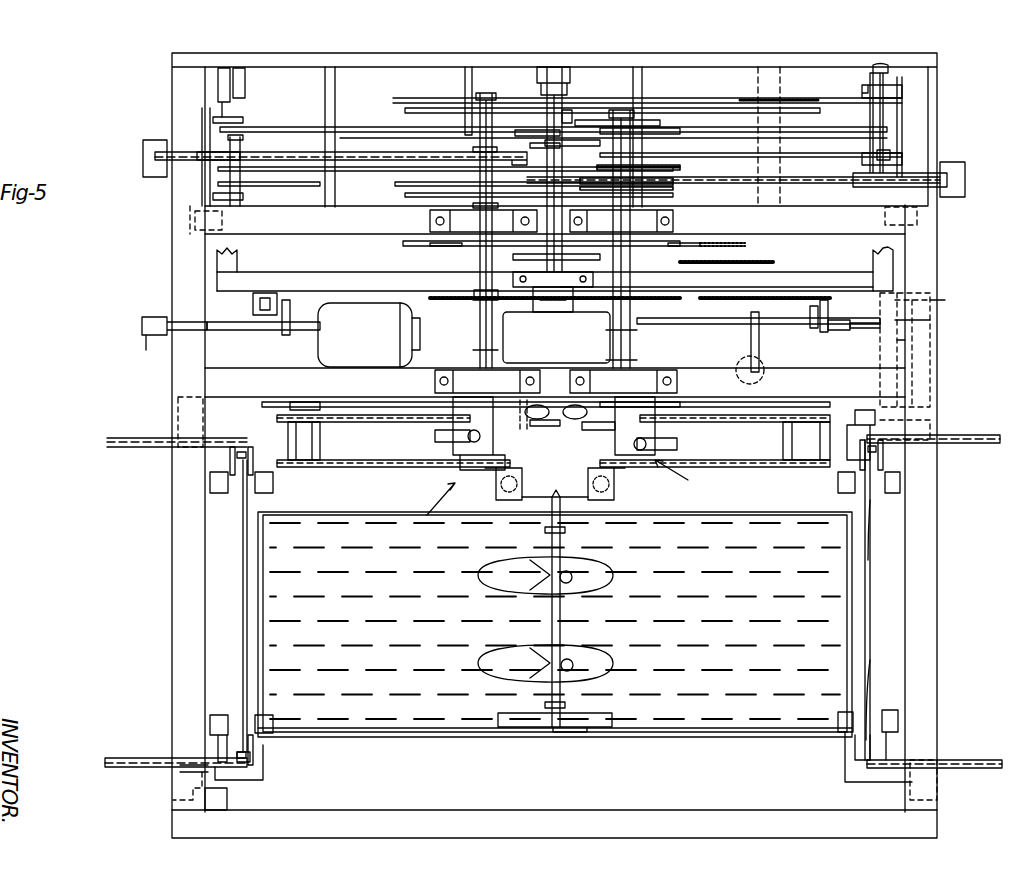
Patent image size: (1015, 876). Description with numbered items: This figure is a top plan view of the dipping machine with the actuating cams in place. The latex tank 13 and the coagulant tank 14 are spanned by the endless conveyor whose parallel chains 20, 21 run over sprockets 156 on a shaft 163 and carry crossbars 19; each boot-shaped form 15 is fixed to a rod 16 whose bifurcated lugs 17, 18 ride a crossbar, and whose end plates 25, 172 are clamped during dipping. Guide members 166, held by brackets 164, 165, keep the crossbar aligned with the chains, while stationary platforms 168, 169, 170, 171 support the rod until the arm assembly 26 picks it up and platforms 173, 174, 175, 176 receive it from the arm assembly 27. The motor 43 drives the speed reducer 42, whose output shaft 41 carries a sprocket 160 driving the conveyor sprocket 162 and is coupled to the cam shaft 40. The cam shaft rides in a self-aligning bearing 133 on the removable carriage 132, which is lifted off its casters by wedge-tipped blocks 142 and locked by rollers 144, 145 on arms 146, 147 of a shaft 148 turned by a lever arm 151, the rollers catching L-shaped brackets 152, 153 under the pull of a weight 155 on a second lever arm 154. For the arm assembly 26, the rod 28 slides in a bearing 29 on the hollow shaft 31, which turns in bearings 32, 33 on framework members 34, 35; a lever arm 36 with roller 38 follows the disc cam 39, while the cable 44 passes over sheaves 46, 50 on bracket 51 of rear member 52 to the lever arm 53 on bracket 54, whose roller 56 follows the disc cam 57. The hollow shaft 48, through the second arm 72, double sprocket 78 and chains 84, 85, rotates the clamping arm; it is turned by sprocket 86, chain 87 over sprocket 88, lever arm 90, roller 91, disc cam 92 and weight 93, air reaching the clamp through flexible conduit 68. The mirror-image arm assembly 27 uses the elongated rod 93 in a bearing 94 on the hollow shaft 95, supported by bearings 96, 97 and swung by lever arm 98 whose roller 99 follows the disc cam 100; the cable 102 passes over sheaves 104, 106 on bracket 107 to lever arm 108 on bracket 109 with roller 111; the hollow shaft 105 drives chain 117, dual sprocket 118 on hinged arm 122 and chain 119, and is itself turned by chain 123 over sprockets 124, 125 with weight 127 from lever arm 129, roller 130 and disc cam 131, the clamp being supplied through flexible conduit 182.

The tank of liquid latex 13 is at (696, 735).
The tank of liquid coagulant 14 is at (356, 735).
The dipping forms 15 is at (530, 585).
The rod 16 is at (555, 615).
The bifurcated lug 17 is at (548, 710).
The bifurcated lug 18 is at (545, 530).
The crossbars 19 is at (240, 598).
The chain 20 is at (146, 772).
The chain 21 is at (145, 437).
The plate 25 is at (590, 430).
The arm assembly 26 is at (675, 481).
The arm assembly 27 is at (419, 513).
The elongated rod 28 is at (674, 427).
The bearing 29 is at (677, 442).
The hollow shaft 31 is at (632, 343).
The bearing 32 is at (623, 382).
The bearing 33 is at (621, 222).
The horizontal framework member 34 is at (213, 383).
The horizontal framework member 35 is at (177, 232).
The lever arm 36 is at (672, 284).
The cam follower roller 38 is at (680, 260).
The disc cam 39 is at (748, 259).
The shaft 40 is at (556, 262).
The output shaft 41 is at (553, 312).
The speed reducer 42 is at (556, 337).
The motor 43 is at (369, 335).
The flexible cable 44 is at (612, 150).
The sheave 46 is at (616, 492).
The hollow shaft 48 is at (668, 243).
The sheave 50 is at (631, 134).
The bracket 51 is at (642, 80).
The horizontal framework member 52 is at (937, 58).
The lever arm 53 is at (324, 128).
The bracket 54 is at (218, 108).
The cam follower roller 56 is at (536, 132).
The disc cam 57 is at (742, 132).
The flexible conduit 68 is at (536, 418).
The second arm 72 is at (752, 412).
The double sprocket 78 is at (784, 440).
The chain 84 is at (748, 470).
The chain 85 is at (714, 410).
The sprocket 86 is at (638, 222).
The chain 87 is at (835, 183).
The sprocket 88 is at (918, 214).
The lever arm 90 is at (308, 188).
The cam follower roller 91 is at (556, 263).
The disc cam 92 is at (700, 190).
The weight 93 is at (965, 165).
The bearing 94 is at (453, 457).
The hollow shaft 95 is at (472, 348).
The bearing 96 is at (487, 382).
The bearing 97 is at (483, 222).
The lever arm 98 is at (445, 246).
The cam follower roller 99 is at (432, 243).
The disc cam 100 is at (712, 243).
The flexible cable 102 is at (470, 108).
The sheave 104 is at (486, 500).
The hollow shaft 105 is at (478, 176).
The sheave 106 is at (486, 96).
The bracket 107 is at (462, 80).
The lever arm 108 is at (576, 100).
The bracket 109 is at (907, 137).
The cam follower roller 111 is at (549, 92).
The chain 117 is at (368, 425).
The dual sprocket 118 is at (268, 410).
The chain 119 is at (366, 470).
The hinged arm 122 is at (312, 404).
The chain 123 is at (302, 168).
The sprocket 124 is at (450, 150).
The sprocket 125 is at (182, 162).
The weight 127 is at (150, 140).
The lever arm 129 is at (749, 137).
The cam follower roller 130 is at (545, 176).
The disc cam 131 is at (672, 170).
The carriage 132 is at (808, 261).
The self-aligning bearing 133 is at (609, 121).
The wedge-tipped blocks 142 is at (218, 76).
The roller 144 is at (828, 306).
The roller 145 is at (280, 266).
The arm 146 is at (838, 330).
The arm 147 is at (296, 306).
The shaft 148 is at (758, 310).
The lever arm 151 is at (146, 350).
The L-shaped bracket 152 is at (870, 328).
The L-shaped bracket 153 is at (252, 306).
The second lever arm 154 is at (759, 345).
The weight 155 is at (742, 358).
The sprockets 156 is at (930, 425).
The sprocket 160 is at (436, 298).
The sprocket 162 is at (932, 298).
The shaft 163 is at (896, 346).
The bracket 164 is at (872, 426).
The bracket 165 is at (220, 745).
The guide members 166 is at (228, 458).
The stationary platform 168 is at (838, 486).
The stationary platform 169 is at (900, 484).
The stationary platform 170 is at (898, 718).
The stationary platform 171 is at (842, 733).
The plate 172 is at (590, 727).
The platform 173 is at (210, 482).
The platform 174 is at (273, 485).
The platform 175 is at (210, 724).
The platform 176 is at (273, 718).
The flexible conduit 182 is at (540, 428).